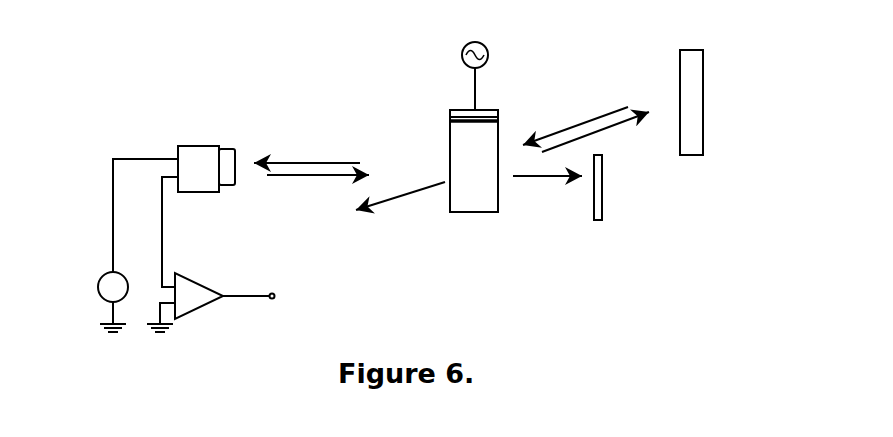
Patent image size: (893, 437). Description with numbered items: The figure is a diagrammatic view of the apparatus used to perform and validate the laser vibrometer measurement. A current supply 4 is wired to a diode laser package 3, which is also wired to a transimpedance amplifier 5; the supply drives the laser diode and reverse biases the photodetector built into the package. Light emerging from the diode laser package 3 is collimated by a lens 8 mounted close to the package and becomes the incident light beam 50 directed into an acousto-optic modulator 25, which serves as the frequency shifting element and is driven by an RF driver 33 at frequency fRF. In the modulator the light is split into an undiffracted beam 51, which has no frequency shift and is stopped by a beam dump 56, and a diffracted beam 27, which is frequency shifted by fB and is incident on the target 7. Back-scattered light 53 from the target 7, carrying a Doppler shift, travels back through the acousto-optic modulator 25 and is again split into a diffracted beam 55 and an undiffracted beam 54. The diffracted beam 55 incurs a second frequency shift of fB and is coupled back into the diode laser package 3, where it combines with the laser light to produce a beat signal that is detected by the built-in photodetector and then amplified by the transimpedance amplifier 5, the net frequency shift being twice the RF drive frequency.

The diode laser package 3 is at (203, 145).
The lens 8 is at (230, 143).
The current supply 4 is at (128, 245).
The transimpedance amplifier 5 is at (211, 254).
The diffracted beam 55 is at (307, 149).
The incident light beam 50 is at (318, 188).
The undiffracted beam 54 is at (400, 203).
The RF driver 33 is at (482, 67).
The acousto-optic modulator 25 is at (457, 157).
The back-scattered light 53 is at (575, 120).
The diffracted beam 27 is at (595, 133).
The undiffracted beam 51 is at (547, 190).
The beam dump 56 is at (607, 200).
The target 7 is at (691, 89).